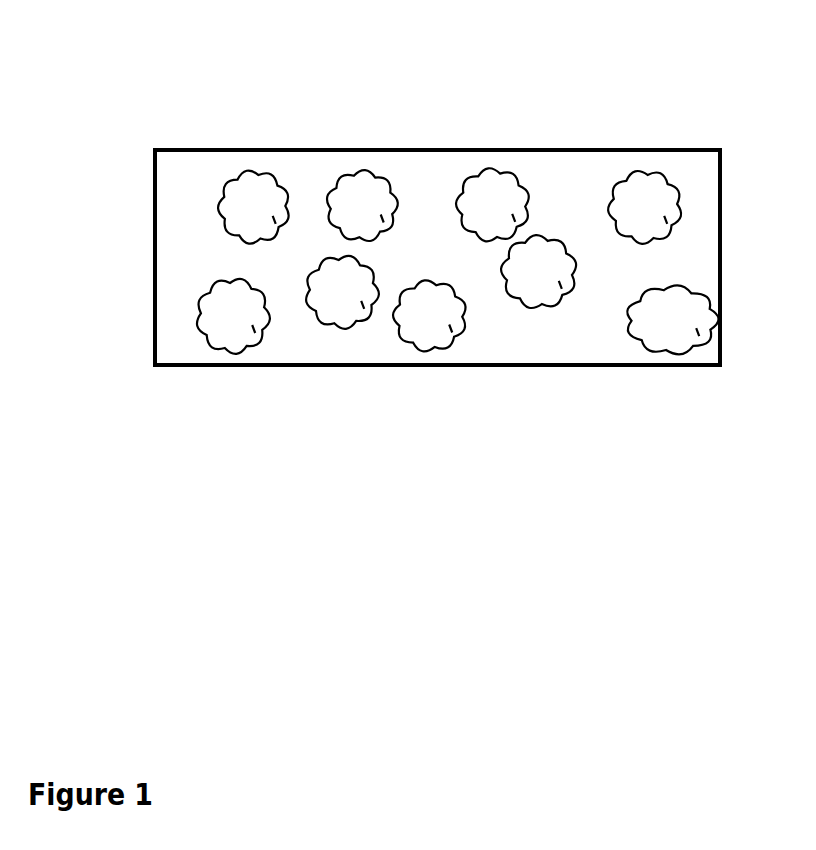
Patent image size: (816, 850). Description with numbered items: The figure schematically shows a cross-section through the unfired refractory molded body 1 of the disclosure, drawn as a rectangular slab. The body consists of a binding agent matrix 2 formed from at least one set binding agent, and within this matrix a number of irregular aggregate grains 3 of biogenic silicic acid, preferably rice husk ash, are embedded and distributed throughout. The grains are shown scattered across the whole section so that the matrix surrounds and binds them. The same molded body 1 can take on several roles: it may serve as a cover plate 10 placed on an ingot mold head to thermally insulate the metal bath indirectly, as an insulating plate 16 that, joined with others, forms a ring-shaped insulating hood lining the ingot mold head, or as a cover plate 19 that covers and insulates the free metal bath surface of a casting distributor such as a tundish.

The unfired refractory molded body 1 is at (472, 185).
The cover plate 10 is at (472, 185).
The insulating plate 16 is at (472, 185).
The cover plate 19 is at (590, 193).
The binding agent matrix 2 is at (547, 177).
The aggregate grains 3 is at (362, 208).